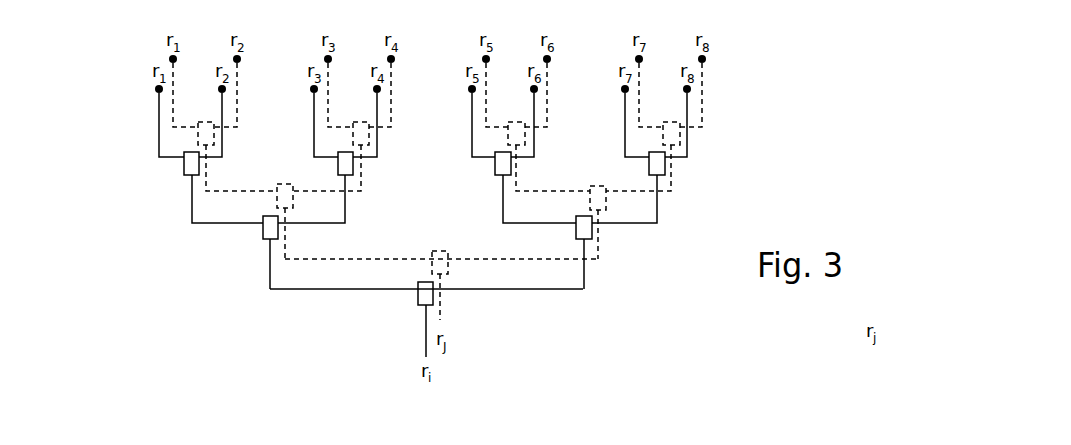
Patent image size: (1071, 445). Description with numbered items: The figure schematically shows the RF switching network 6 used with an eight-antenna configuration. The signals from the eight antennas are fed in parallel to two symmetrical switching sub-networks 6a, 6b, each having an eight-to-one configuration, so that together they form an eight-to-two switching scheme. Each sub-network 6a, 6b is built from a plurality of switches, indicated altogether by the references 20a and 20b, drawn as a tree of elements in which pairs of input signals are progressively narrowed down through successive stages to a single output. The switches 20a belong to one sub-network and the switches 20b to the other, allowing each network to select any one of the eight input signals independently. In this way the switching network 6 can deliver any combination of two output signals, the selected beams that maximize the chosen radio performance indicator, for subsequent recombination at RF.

The RF switching network 6 is at (743, 111).
The first switching sub-network 6a is at (583, 288).
The second switching sub-network 6b is at (600, 257).
The switches 20a is at (199, 163).
The switches 20b is at (208, 136).